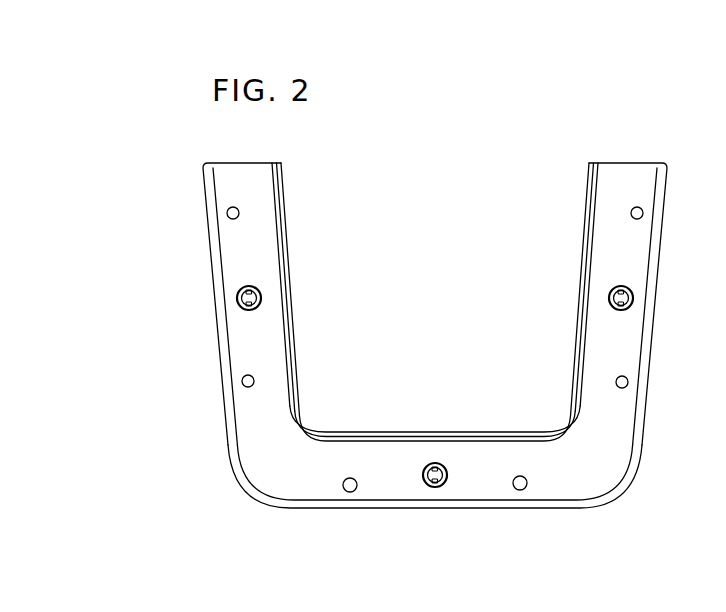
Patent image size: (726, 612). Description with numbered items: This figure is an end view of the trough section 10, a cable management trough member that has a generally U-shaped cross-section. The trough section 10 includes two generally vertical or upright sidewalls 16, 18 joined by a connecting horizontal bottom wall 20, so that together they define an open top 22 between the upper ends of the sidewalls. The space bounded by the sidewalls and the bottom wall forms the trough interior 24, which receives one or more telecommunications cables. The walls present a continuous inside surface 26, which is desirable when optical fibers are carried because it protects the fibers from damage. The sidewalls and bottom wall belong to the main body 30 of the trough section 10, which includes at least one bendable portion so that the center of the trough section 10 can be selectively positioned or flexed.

The trough section 10 is at (168, 323).
The sidewall 16 is at (245, 163).
The sidewall 18 is at (628, 163).
The bottom wall 20 is at (440, 434).
The open top 22 is at (505, 152).
The trough interior 24 is at (352, 322).
The continuous inside surface 26 is at (573, 367).
The main body 30 is at (630, 477).